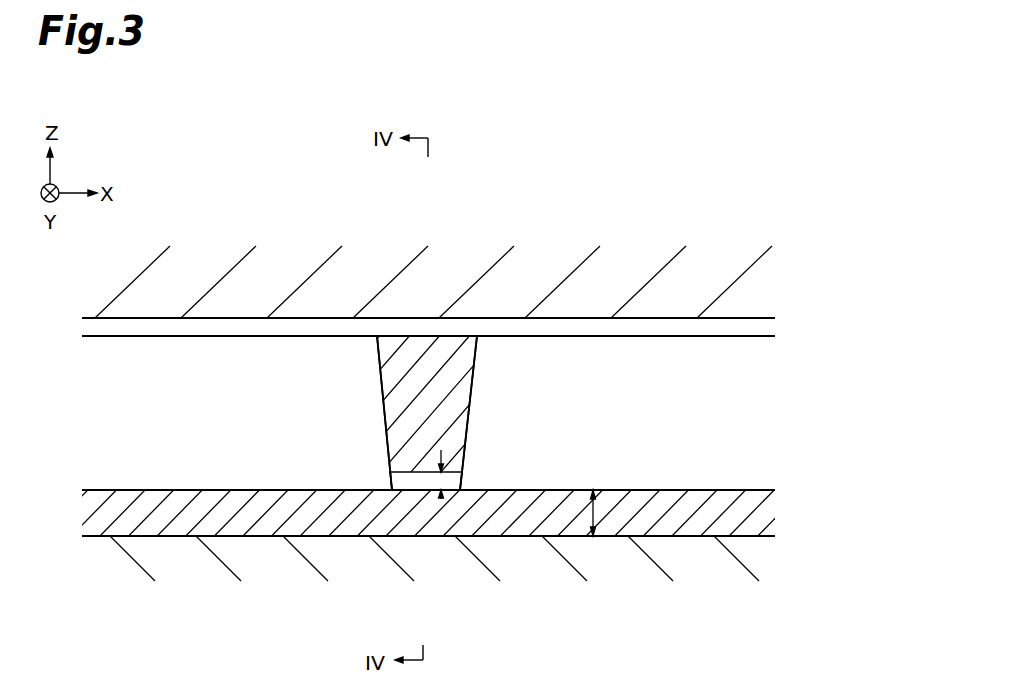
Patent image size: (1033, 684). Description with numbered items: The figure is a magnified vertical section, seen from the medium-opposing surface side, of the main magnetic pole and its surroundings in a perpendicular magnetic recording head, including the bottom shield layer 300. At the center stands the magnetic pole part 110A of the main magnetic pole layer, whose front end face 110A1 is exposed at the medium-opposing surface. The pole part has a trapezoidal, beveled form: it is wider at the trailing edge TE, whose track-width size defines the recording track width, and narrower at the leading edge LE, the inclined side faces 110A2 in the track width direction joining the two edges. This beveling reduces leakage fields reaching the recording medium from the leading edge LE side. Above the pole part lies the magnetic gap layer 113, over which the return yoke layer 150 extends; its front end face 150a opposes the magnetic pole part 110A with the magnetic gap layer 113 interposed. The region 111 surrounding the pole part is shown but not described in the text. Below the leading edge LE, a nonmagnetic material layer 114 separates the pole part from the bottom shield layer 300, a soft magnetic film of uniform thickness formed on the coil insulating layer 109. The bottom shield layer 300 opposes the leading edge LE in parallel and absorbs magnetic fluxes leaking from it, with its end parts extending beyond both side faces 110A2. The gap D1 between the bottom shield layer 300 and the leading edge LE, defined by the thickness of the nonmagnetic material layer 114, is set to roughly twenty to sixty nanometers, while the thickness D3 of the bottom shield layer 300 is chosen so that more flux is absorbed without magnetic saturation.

The return yoke layer 150 is at (515, 282).
The front end face of return yoke layer 150a is at (748, 268).
The magnetic gap layer 113 is at (742, 327).
The gap 111 is at (740, 397).
The bottom shield layer 300 is at (735, 508).
The coil insulating layer 109 is at (738, 558).
The magnetic pole part 110A is at (418, 318).
The front end face of magnetic pole part 110A1 is at (417, 380).
The side faces of magnetic pole part 110A2 is at (383, 387).
The trailing edge TE is at (424, 336).
The leading edge LE is at (406, 473).
The nonmagnetic material layer 114 is at (424, 483).
The gap D1 is at (446, 476).
The thickness of bottom shield layer D3 is at (594, 500).